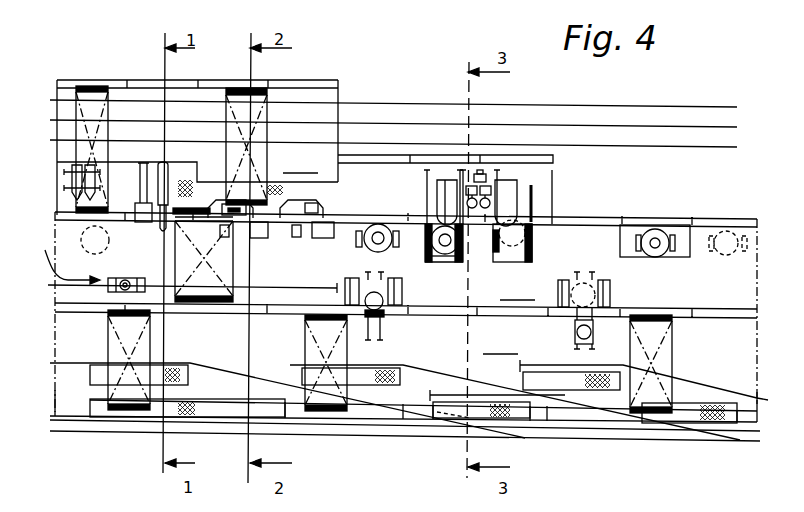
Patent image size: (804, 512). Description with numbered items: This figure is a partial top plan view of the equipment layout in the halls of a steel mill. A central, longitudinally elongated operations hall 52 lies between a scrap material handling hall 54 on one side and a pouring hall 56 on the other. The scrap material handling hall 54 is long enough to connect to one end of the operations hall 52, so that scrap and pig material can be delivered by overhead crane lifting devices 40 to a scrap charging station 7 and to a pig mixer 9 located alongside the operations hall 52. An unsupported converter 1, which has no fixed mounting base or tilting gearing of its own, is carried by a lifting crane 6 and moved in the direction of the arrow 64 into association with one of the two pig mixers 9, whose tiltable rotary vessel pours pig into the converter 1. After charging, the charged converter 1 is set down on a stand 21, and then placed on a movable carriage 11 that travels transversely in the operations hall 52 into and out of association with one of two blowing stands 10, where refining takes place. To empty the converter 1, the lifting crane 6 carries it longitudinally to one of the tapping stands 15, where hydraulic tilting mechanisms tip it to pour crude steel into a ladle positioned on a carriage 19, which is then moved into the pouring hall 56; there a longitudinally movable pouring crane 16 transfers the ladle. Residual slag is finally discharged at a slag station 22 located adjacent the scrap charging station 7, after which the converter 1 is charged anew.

The overhead crane lifting devices 40 is at (93, 108).
The scrap material handling hall 54 is at (300, 162).
The scrap charging device or station 7 is at (148, 236).
The lifting device or lifting crane 6 is at (233, 277).
The pig mixer 9 is at (226, 237).
The slag carriage or station 22 is at (110, 278).
The arrow 64 is at (58, 267).
The stand 21 is at (391, 251).
The converter 1 is at (455, 253).
The movable carriage 11 is at (448, 264).
The blowing stand 10 is at (437, 190).
The tapping stand 15 is at (350, 282).
The carriage 19 is at (384, 315).
The operations hall 52 is at (517, 289).
The pouring hall 56 is at (500, 343).
The pouring crane 16 is at (305, 351).